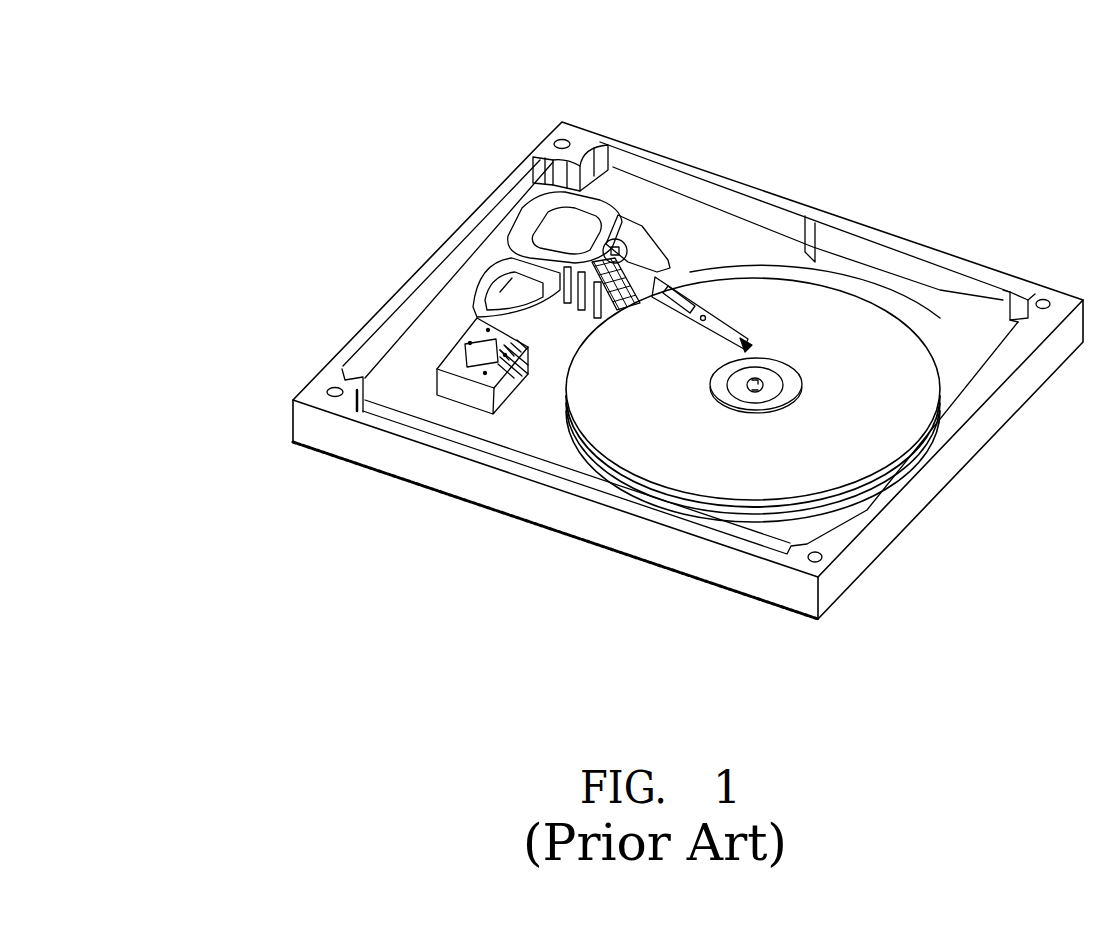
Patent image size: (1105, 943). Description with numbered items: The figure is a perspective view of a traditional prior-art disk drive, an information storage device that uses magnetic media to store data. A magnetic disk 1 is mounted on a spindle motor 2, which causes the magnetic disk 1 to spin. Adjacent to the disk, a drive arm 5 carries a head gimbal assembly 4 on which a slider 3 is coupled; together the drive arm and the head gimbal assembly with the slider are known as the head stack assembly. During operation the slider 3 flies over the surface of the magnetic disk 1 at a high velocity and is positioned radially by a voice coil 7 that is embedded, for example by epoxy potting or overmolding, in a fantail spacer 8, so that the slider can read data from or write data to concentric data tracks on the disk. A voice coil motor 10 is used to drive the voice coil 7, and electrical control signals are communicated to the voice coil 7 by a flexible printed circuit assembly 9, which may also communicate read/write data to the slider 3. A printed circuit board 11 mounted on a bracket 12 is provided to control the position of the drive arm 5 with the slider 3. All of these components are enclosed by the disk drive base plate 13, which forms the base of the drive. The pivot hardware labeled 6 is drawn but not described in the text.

The magnetic disk 1 is at (850, 403).
The spindle motor 2 is at (801, 381).
The slider 3 is at (745, 347).
The head gimbal assembly 4 is at (720, 320).
The drive arm 5 is at (652, 270).
The pivot screw 6 is at (617, 238).
The voice coil 7 is at (545, 155).
The fantail spacer 8 is at (514, 222).
The flexible printed circuit assembly 9 is at (475, 275).
The voice coil motor 10 is at (477, 305).
The printed circuit board 11 is at (465, 342).
The bracket 12 is at (490, 360).
The disk drive base plate 13 is at (707, 557).